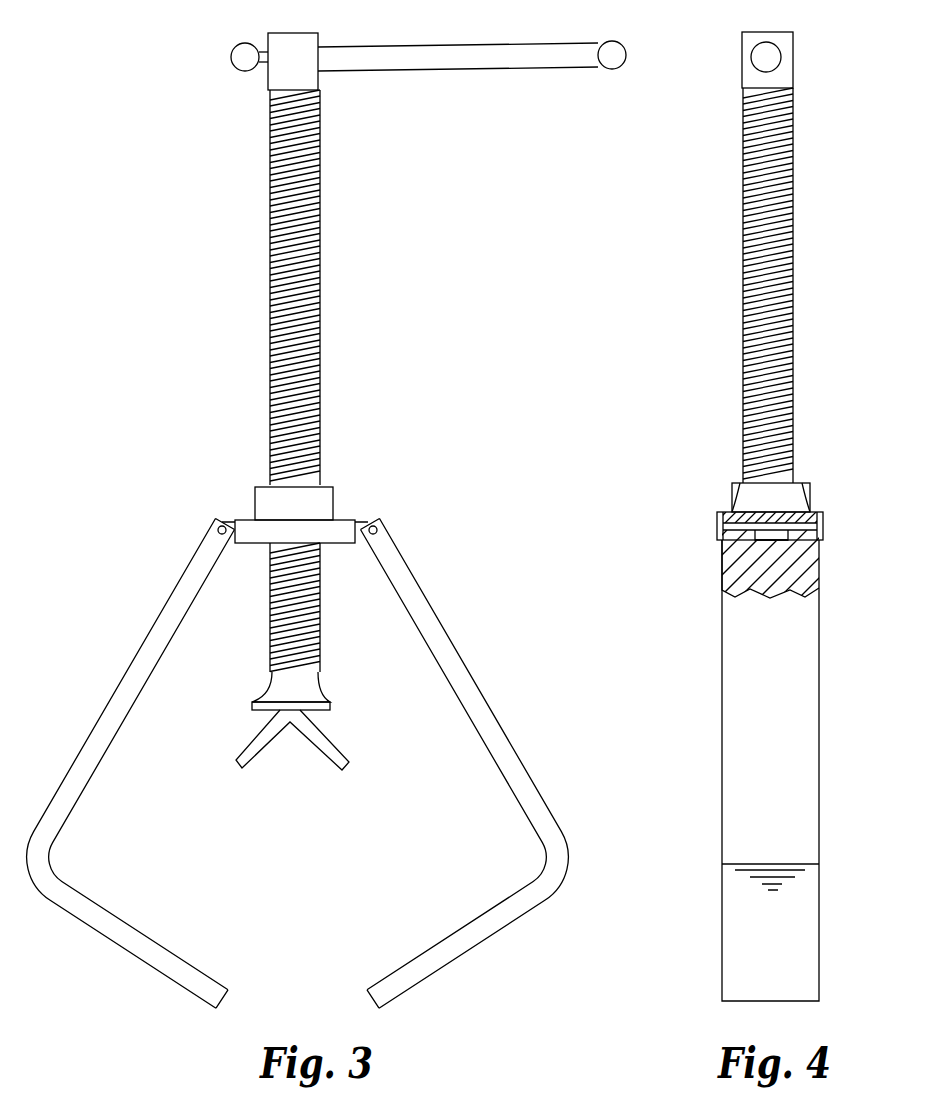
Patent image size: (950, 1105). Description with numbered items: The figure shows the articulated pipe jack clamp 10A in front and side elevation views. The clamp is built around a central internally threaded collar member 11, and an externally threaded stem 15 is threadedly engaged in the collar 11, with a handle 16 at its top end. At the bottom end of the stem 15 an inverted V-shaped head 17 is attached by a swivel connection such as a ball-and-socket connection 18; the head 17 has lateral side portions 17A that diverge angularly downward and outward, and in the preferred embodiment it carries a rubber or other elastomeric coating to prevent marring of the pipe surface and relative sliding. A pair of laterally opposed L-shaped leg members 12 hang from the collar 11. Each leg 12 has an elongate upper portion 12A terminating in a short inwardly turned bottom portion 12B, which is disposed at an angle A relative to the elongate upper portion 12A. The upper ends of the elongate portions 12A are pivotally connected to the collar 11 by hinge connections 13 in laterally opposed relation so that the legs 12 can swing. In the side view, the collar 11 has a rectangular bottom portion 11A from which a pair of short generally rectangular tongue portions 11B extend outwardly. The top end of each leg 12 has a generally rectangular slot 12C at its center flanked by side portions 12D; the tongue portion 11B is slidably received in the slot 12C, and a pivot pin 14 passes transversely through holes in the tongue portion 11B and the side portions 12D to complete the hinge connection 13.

In FIG. 3, the articulated pipe jack clamp 10A is at (200, 312).
In FIG. 4, the articulated pipe jack clamp 10A is at (675, 330).
In FIG. 3, the central internally threaded collar member 11 is at (335, 500).
In FIG. 4, the central internally threaded collar member 11 is at (730, 490).
In FIG. 3, the rectangular bottom portion 11A is at (275, 520).
In FIG. 4, the rectangular bottom portion 11A is at (720, 522).
In FIG. 3, the tongue portion 11B is at (225, 520).
In FIG. 4, the tongue portion 11B is at (780, 500).
In FIG. 3, the L-shaped leg member 12 is at (118, 677).
In FIG. 4, the L-shaped leg member 12 is at (720, 663).
In FIG. 3, the elongate upper portion 12A is at (103, 706).
In FIG. 4, the elongate upper portion 12A is at (790, 735).
In FIG. 3, the inwardly turned bottom portion 12B is at (120, 950).
In FIG. 4, the inwardly turned bottom portion 12B is at (800, 957).
In FIG. 4, the rectangular slot 12C is at (763, 546).
In FIG. 4, the side portions 12D is at (732, 500).
In FIG. 3, the hinge connection 13 is at (215, 530).
In FIG. 3, the pivot pin 14 is at (408, 528).
In FIG. 4, the pivot pin 14 is at (805, 541).
In FIG. 3, the externally threaded stem 15 is at (322, 265).
In FIG. 4, the externally threaded stem 15 is at (743, 230).
In FIG. 3, the handle 16 is at (400, 48).
In FIG. 3, the inverted V-shaped head 17 is at (327, 745).
In FIG. 3, the lateral side portions 17A is at (262, 742).
In FIG. 3, the ball-and-socket connection 18 is at (313, 687).
In FIG. 3, the angle A is at (73, 807).